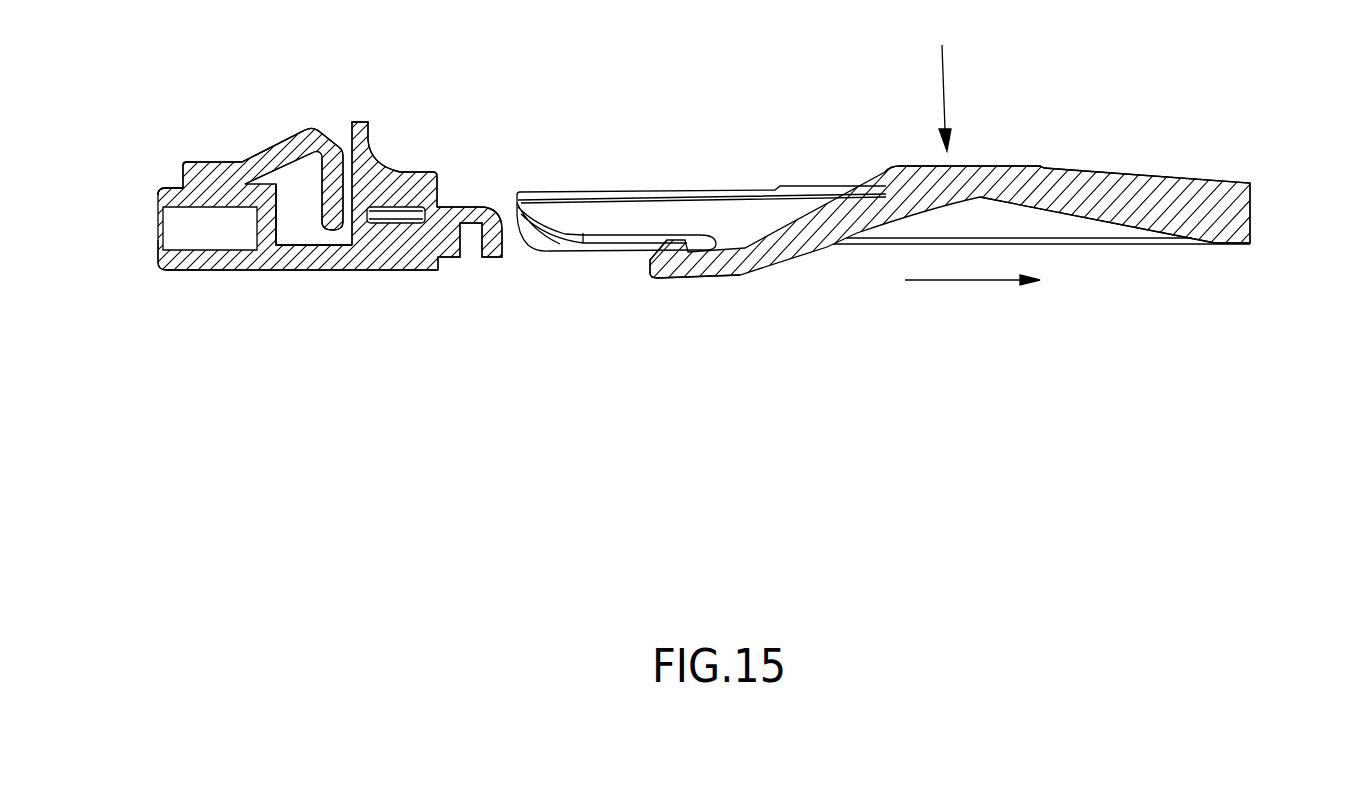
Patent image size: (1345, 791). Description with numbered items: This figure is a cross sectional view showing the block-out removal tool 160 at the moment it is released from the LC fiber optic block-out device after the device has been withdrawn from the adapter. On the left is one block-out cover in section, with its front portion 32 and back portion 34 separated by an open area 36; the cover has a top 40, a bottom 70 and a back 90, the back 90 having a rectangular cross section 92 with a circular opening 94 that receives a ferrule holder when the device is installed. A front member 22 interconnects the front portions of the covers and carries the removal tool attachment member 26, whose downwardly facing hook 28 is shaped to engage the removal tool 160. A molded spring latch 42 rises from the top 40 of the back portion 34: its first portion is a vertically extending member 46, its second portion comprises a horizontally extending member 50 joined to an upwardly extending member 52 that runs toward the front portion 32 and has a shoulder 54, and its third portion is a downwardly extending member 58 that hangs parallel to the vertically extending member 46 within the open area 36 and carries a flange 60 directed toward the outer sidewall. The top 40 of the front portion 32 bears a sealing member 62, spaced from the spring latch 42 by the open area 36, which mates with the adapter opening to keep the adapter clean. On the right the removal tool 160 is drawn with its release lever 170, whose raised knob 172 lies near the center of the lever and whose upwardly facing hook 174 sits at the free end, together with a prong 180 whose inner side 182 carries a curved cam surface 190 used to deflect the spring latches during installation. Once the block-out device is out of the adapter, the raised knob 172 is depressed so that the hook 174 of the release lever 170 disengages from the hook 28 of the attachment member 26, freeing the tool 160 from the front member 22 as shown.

The front member 22 is at (442, 190).
The attachment member 26 is at (479, 200).
The downwardly facing hook 28 is at (497, 258).
The front portion 32 is at (384, 175).
The back portion 34 is at (194, 262).
The open area 36 is at (340, 140).
The top 40 is at (172, 190).
The spring latch 42 is at (255, 158).
The vertically extending member 46 is at (178, 166).
The horizontally extending member 50 is at (213, 161).
The upwardly extending member 52 is at (266, 154).
The shoulder 54 is at (318, 122).
The downwardly extending member 58 is at (313, 186).
The flange 60 is at (332, 212).
The sealing member 62 is at (385, 158).
The bottom 70 is at (250, 270).
The back 90 is at (155, 251).
The rectangular cross section 92 is at (162, 192).
The circular opening 94 is at (188, 231).
The removal tool 160 is at (1236, 148).
The release lever 170 is at (1088, 182).
The raised knob 172 is at (986, 164).
The upwardly facing hook 174 is at (664, 258).
The prong 180 is at (702, 192).
The inner side 182 is at (602, 218).
The cam surface 190 is at (603, 245).